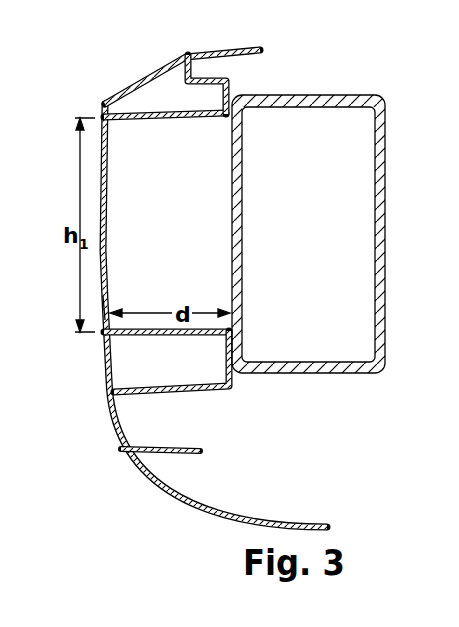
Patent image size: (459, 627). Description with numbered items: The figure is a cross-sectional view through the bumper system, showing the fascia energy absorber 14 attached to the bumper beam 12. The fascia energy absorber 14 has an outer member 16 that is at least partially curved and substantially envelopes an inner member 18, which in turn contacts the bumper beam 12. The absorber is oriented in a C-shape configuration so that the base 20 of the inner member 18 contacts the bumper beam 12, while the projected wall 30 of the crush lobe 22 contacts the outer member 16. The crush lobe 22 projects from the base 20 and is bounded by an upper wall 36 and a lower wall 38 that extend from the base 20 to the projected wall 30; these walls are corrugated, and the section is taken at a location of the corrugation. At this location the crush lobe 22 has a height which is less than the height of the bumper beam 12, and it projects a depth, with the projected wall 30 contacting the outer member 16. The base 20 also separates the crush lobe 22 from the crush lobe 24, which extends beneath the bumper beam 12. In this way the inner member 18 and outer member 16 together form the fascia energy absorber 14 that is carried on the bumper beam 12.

The bumper beam 12 is at (331, 96).
The fascia energy absorber 14 is at (179, 283).
The outer member 16 is at (152, 73).
The inner member 18 is at (308, 190).
The base 20 is at (224, 96).
The crush lobe 22 is at (136, 287).
The crush lobe 24 is at (128, 417).
The projected wall 30 is at (112, 223).
The upper wall 36 is at (157, 120).
The lower wall 38 is at (168, 337).